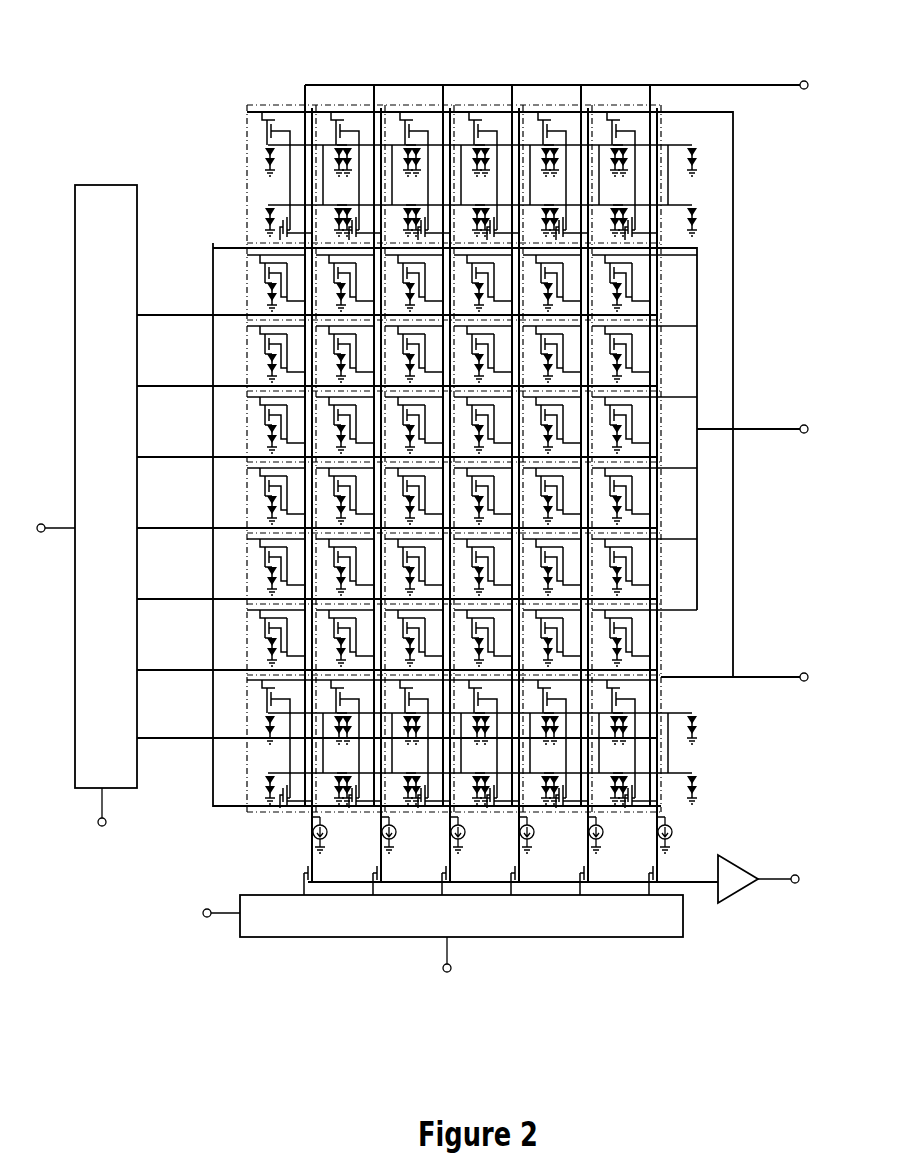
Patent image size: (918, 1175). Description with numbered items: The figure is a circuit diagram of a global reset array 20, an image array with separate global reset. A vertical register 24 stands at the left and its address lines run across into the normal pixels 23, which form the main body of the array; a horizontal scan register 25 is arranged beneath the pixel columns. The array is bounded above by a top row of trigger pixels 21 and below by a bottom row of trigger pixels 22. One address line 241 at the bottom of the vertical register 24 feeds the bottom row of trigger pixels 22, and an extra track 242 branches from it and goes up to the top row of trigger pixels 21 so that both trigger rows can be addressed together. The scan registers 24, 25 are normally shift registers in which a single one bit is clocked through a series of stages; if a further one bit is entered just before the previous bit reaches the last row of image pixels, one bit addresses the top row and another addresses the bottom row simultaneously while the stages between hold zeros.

The global reset array 20 is at (170, 72).
The trigger pixel row region 21 is at (663, 177).
The trigger pixels 22 is at (663, 745).
The normal pixels 23 is at (663, 275).
The vertical register 24 is at (137, 200).
The scan register 25 is at (683, 919).
The address line 241 is at (178, 738).
The extra track 242 is at (213, 702).